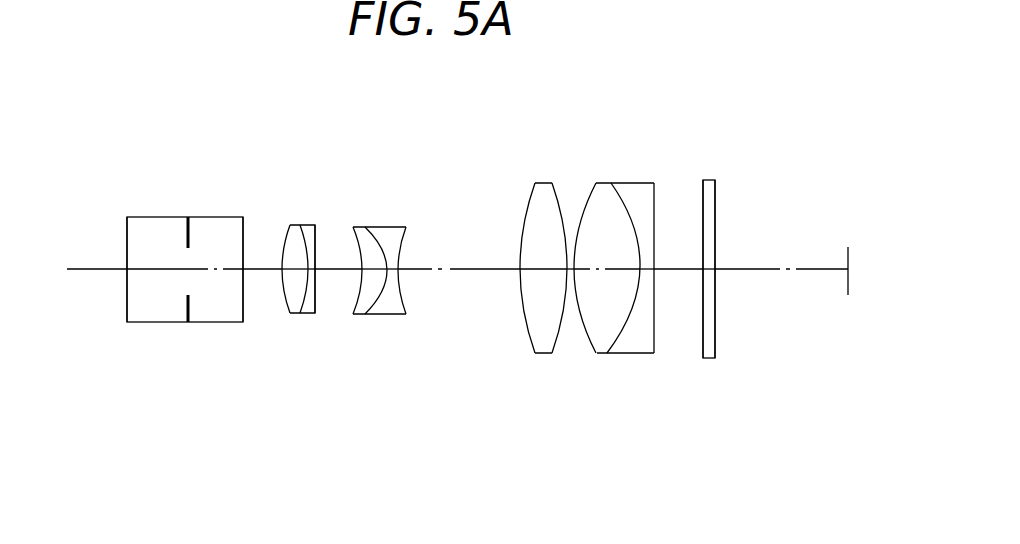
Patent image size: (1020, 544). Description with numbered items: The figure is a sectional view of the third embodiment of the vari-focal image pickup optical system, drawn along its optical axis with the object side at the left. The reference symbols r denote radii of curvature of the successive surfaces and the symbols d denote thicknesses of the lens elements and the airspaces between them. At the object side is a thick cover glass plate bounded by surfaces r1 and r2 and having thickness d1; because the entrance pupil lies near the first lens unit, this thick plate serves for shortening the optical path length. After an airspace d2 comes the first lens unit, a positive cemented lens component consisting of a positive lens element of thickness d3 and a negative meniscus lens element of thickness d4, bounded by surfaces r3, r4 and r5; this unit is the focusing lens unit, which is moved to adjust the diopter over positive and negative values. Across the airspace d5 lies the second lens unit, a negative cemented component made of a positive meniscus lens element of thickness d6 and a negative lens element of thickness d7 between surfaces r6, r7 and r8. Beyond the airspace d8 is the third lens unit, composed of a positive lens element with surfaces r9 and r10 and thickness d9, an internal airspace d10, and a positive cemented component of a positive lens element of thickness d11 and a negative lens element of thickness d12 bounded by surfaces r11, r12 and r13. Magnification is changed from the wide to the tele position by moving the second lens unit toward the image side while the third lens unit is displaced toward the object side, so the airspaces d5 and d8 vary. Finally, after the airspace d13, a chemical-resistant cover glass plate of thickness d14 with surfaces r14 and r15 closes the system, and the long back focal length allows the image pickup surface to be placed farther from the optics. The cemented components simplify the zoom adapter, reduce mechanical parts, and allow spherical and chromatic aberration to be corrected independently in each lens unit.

The radius of curvature of first surface r1 is at (127, 237).
The radius of curvature of second surface r2 is at (243, 240).
The radius of curvature of third surface r3 is at (286, 242).
The radius of curvature of fourth surface r4 is at (310, 230).
The radius of curvature of fifth surface r5 is at (317, 240).
The radius of curvature of sixth surface r6 is at (358, 246).
The radius of curvature of seventh surface r7 is at (387, 243).
The radius of curvature of eighth surface r8 is at (405, 248).
The radius of curvature of ninth surface r9 is at (530, 203).
The radius of curvature of tenth surface r10 is at (555, 202).
The radius of curvature of eleventh surface r11 is at (589, 197).
The radius of curvature of twelfth surface r12 is at (626, 188).
The radius of curvature of thirteenth surface r13 is at (655, 197).
The radius of curvature of fourteenth surface r14 is at (703, 198).
The radius of curvature of fifteenth surface r15 is at (715, 198).
The thickness of cover glass plate d1 is at (162, 272).
The airspace between cover glass and first lens unit d2 is at (262, 272).
The thickness of positive lens element of first lens unit d3 is at (290, 315).
The thickness of negative meniscus lens element of first lens unit d4 is at (307, 277).
The airspace between first and second lens units d5 is at (332, 272).
The thickness of positive meniscus lens element of second lens unit d6 is at (367, 272).
The thickness of negative lens element of second lens unit d7 is at (386, 272).
The airspace between second and third lens units d8 is at (459, 270).
The thickness of positive lens element of third lens unit d9 is at (543, 273).
The airspace within third lens unit d10 is at (567, 273).
The thickness of positive lens element of cemented component d11 is at (608, 273).
The thickness of negative lens element of cemented component d12 is at (643, 273).
The airspace between third lens unit and rear cover glass d13 is at (675, 273).
The thickness of rear cover glass plate d14 is at (705, 273).